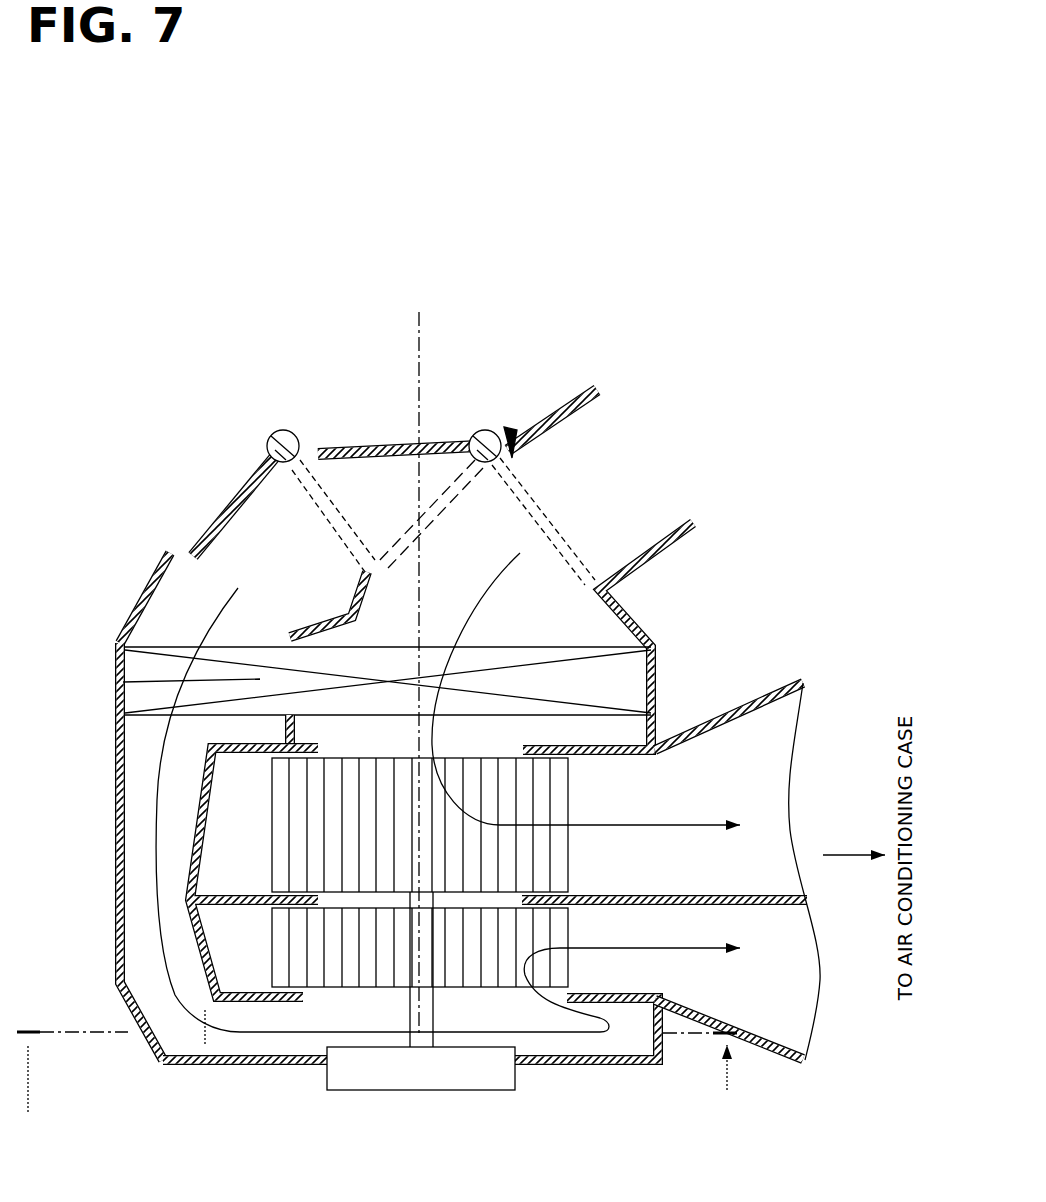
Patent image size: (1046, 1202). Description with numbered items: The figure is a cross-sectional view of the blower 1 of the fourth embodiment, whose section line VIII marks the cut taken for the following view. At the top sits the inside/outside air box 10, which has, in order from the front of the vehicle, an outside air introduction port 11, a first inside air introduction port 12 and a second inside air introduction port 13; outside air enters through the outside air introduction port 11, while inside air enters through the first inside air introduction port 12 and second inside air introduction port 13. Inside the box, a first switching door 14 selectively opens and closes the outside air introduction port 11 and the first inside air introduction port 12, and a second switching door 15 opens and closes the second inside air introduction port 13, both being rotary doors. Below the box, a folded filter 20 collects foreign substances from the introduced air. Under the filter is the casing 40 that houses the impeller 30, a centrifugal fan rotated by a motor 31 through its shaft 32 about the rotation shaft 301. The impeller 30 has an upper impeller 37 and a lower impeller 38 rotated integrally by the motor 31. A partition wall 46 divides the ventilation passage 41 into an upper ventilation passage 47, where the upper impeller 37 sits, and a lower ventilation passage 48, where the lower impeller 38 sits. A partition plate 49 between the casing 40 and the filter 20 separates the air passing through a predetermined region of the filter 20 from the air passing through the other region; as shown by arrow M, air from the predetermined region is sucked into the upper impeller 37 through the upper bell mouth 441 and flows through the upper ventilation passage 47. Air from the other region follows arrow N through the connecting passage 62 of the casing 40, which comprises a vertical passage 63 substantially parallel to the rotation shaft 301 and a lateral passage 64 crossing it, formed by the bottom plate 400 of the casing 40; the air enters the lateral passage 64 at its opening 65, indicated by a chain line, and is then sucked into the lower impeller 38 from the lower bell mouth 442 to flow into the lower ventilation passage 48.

The blower 1 is at (262, 298).
The inside/outside air box 10 is at (344, 806).
The outside air introduction port 11 is at (598, 530).
The first inside air introduction port 12 is at (383, 437).
The second inside air introduction port 13 is at (196, 522).
The first switching door 14 is at (437, 440).
The second switching door 15 is at (226, 496).
The filter 20 is at (600, 680).
The impeller 30 is at (420, 961).
The motor 31 is at (488, 1075).
The shaft 32 is at (452, 1040).
The upper impeller 37 is at (357, 867).
The lower impeller 38 is at (383, 963).
The casing 40 is at (115, 880).
The ventilation passage 41 is at (783, 873).
The partition wall 46 is at (745, 922).
The upper ventilation passage 47 is at (757, 797).
The lower ventilation passage 48 is at (777, 990).
The partition plate 49 is at (285, 723).
The connecting passage 62 is at (372, 860).
The vertical passage 63 is at (147, 793).
The lateral passage 64 is at (553, 1042).
The opening 65 is at (205, 1033).
The rotation shaft 301 is at (430, 318).
The bottom plate 400 is at (255, 1067).
The upper bell mouth 441 is at (123, 682).
The lower bell mouth 442 is at (313, 1000).
The arrow M is at (707, 825).
The arrow N is at (600, 1037).
The section line VIII- VIII is at (378, 1076).